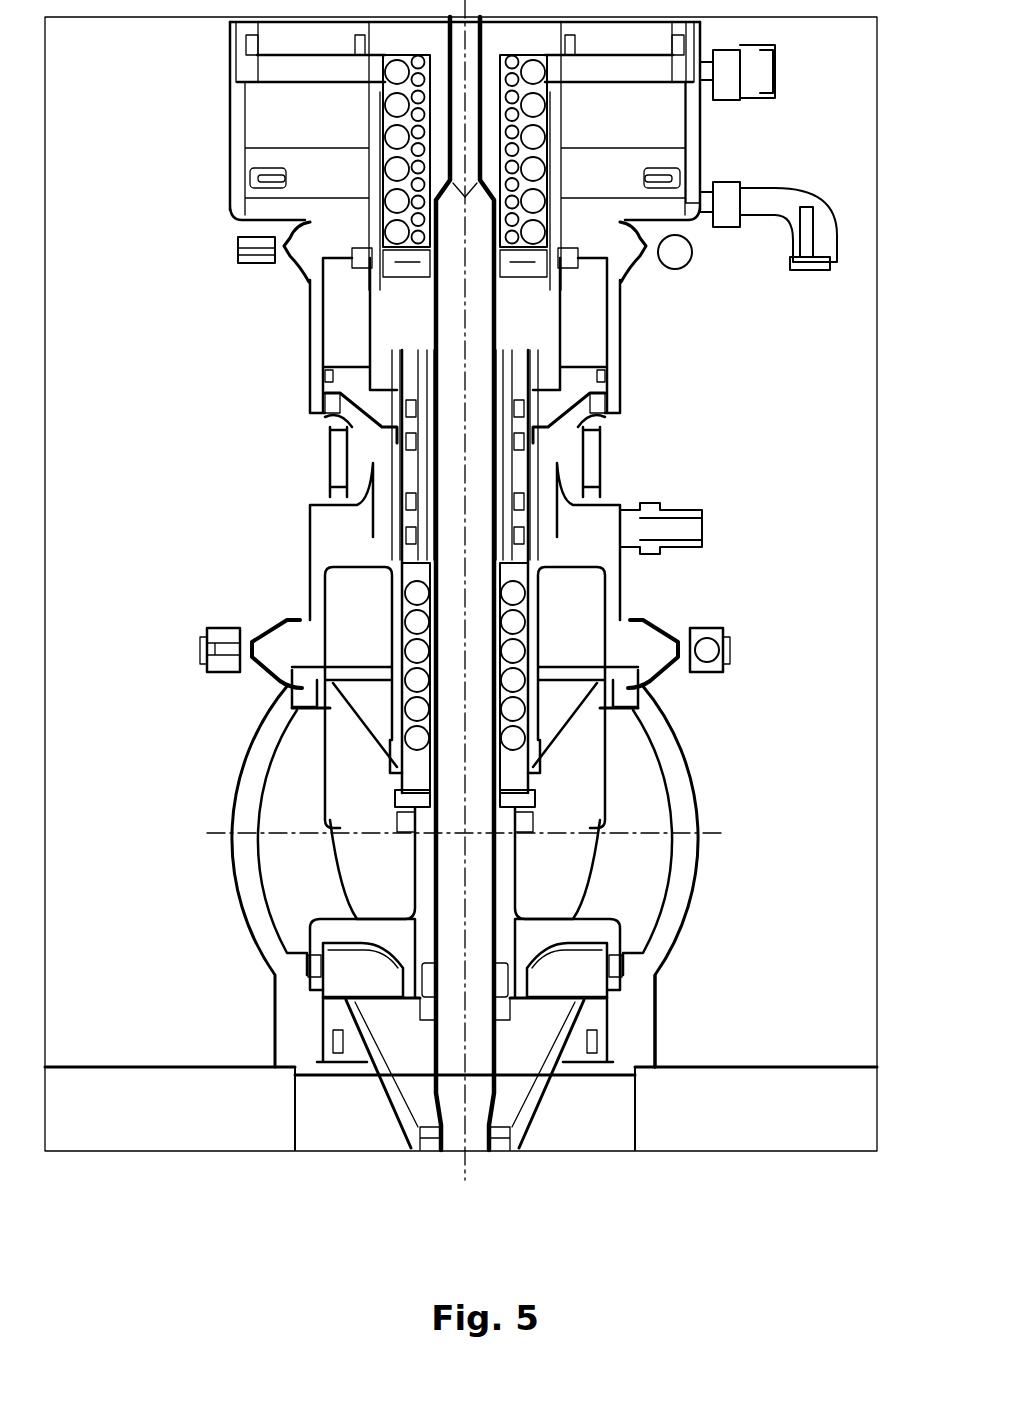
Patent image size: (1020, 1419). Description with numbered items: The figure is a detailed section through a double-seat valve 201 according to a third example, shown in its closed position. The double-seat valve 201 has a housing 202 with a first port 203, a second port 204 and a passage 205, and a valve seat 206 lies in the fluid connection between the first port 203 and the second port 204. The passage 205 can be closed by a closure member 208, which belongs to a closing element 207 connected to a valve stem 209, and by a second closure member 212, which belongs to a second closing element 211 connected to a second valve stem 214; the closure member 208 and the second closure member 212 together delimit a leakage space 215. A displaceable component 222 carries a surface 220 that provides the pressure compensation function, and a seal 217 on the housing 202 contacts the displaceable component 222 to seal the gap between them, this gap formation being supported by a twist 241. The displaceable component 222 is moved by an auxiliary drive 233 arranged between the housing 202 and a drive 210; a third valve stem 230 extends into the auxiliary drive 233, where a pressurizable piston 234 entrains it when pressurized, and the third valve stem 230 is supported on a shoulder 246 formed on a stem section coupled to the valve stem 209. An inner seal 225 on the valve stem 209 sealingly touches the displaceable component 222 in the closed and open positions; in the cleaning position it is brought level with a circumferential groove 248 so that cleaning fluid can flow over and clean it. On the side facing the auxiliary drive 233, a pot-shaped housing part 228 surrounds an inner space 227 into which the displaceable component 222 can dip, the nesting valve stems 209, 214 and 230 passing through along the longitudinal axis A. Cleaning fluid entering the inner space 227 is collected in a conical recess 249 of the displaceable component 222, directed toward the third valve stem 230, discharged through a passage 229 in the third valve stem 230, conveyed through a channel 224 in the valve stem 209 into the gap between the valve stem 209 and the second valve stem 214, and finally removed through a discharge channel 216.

The double-seat valve 201 is at (174, 160).
The drive 210 is at (275, 212).
The auxiliary drive 233 is at (298, 340).
The pressurizable piston 234 is at (340, 386).
The shoulder 246 is at (600, 388).
The third valve stem 230 is at (545, 478).
The pot-shaped housing part 228 is at (318, 555).
The inner space 227 is at (377, 630).
The twist 241 is at (625, 695).
The seal 217 is at (633, 688).
The recess 249 is at (288, 707).
The housing 202 is at (257, 745).
The passage 229 is at (543, 743).
The displaceable component 222 is at (580, 778).
The channel 224 is at (517, 800).
The circumferential groove 248 is at (395, 802).
The inner seal 225 is at (397, 818).
The first port 203 is at (245, 835).
The valve stem 209 is at (367, 853).
The closing element 207 is at (296, 921).
The surface 220 is at (563, 845).
The closure member 208 is at (573, 928).
The valve seat 206 is at (625, 975).
The second closure member 212 is at (583, 1020).
The passage 205 is at (606, 1020).
The second port 204 is at (105, 1063).
The second valve stem 214 is at (450, 1045).
The second closing element 211 is at (354, 1089).
The discharge channel 216 is at (503, 1098).
The leakage space 215 is at (337, 983).
The longitudinal axis A is at (468, 1143).